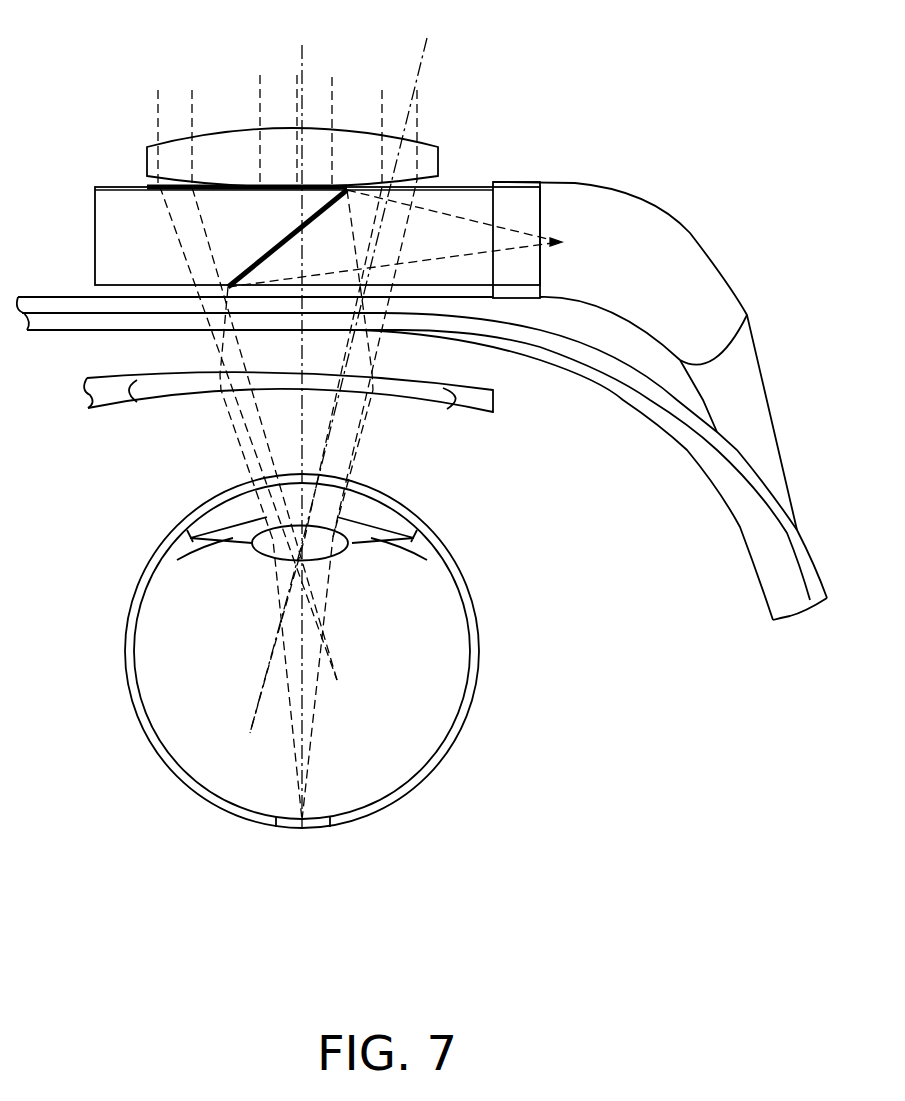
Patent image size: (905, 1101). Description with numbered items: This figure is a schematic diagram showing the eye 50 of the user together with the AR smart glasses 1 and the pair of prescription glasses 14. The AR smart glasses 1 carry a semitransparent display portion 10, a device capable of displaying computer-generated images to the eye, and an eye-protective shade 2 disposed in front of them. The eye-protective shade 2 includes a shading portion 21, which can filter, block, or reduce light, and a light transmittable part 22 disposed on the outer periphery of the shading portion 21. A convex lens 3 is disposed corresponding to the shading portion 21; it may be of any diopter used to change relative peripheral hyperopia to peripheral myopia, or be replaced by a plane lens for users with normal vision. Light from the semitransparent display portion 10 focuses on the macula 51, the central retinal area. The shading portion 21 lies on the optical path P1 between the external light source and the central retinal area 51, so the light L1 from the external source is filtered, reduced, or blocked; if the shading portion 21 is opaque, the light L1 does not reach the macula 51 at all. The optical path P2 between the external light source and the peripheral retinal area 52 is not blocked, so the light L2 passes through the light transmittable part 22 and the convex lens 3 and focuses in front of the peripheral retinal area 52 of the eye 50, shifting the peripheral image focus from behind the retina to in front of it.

The AR smart glasses 1 is at (773, 241).
The eye-protective shade 2 is at (465, 187).
The convex lens 3 is at (147, 147).
The semitransparent display portion 10 is at (273, 242).
The prescription glasses 14 is at (155, 390).
The shading portion 21 is at (313, 185).
The light transmittable part 22 is at (180, 202).
The eye 50 is at (457, 577).
The macula 51 is at (303, 825).
The peripheral retinal area 52 is at (160, 765).
The light from the external light source L1 is at (315, 83).
The light from the external light source L2 is at (172, 98).
The optical path P1 is at (298, 60).
The optical path P2 is at (428, 58).